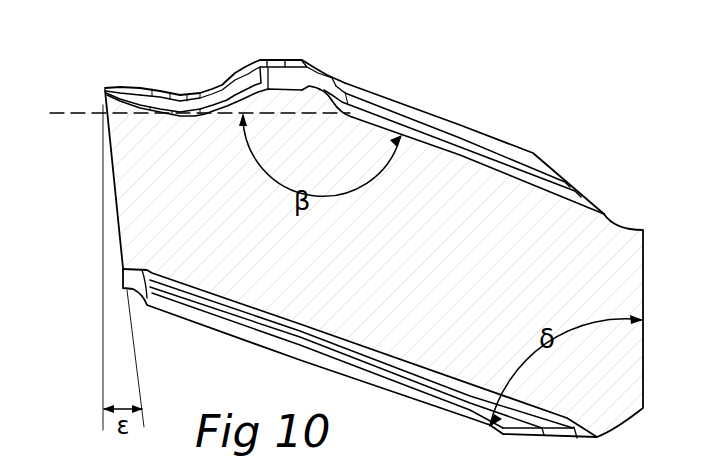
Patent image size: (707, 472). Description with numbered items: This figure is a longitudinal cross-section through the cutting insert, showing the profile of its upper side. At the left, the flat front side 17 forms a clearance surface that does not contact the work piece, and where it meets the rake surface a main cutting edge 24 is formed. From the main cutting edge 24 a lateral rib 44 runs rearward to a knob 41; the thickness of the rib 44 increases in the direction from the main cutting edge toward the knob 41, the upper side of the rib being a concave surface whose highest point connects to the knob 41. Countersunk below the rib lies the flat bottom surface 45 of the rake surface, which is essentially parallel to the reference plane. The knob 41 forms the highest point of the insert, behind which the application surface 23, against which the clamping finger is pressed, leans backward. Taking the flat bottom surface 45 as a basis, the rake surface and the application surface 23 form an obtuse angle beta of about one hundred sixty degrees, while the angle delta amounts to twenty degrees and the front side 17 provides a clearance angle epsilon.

The front side 17 is at (117, 195).
The application surface 23 is at (442, 118).
The main cutting edge 24 is at (105, 88).
The knob 41 is at (276, 60).
The lateral rib 44 is at (228, 87).
The flat bottom surface 45 is at (186, 116).